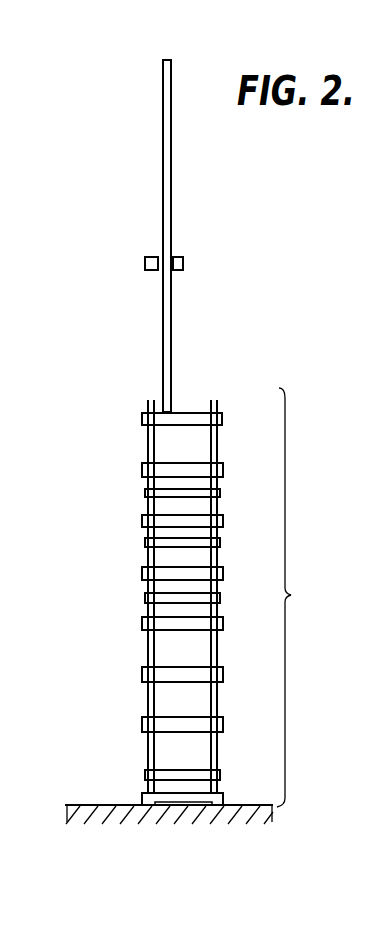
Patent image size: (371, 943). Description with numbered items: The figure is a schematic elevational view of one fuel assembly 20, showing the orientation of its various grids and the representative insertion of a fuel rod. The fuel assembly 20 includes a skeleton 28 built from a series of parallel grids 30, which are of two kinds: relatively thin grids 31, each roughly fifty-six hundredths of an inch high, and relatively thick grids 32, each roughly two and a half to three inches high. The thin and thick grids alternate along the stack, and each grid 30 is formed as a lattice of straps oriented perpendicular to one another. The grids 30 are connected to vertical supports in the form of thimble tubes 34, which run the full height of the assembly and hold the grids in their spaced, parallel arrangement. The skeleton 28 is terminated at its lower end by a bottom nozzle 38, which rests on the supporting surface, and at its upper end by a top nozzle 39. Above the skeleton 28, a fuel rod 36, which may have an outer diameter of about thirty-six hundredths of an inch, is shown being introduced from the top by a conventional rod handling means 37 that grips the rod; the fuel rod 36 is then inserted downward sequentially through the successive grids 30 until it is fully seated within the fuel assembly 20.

The fuel assembly 20 is at (126, 233).
The skeleton 28 is at (315, 606).
The grids 30 is at (110, 546).
The relatively thin grids 31 is at (145, 493).
The relatively thick grids 32 is at (143, 573).
The thimble tubes 34 is at (147, 647).
The fuel rod 36 is at (171, 188).
The rod handling means 37 is at (183, 262).
The bottom nozzle 38 is at (223, 798).
The top nozzle 39 is at (222, 418).